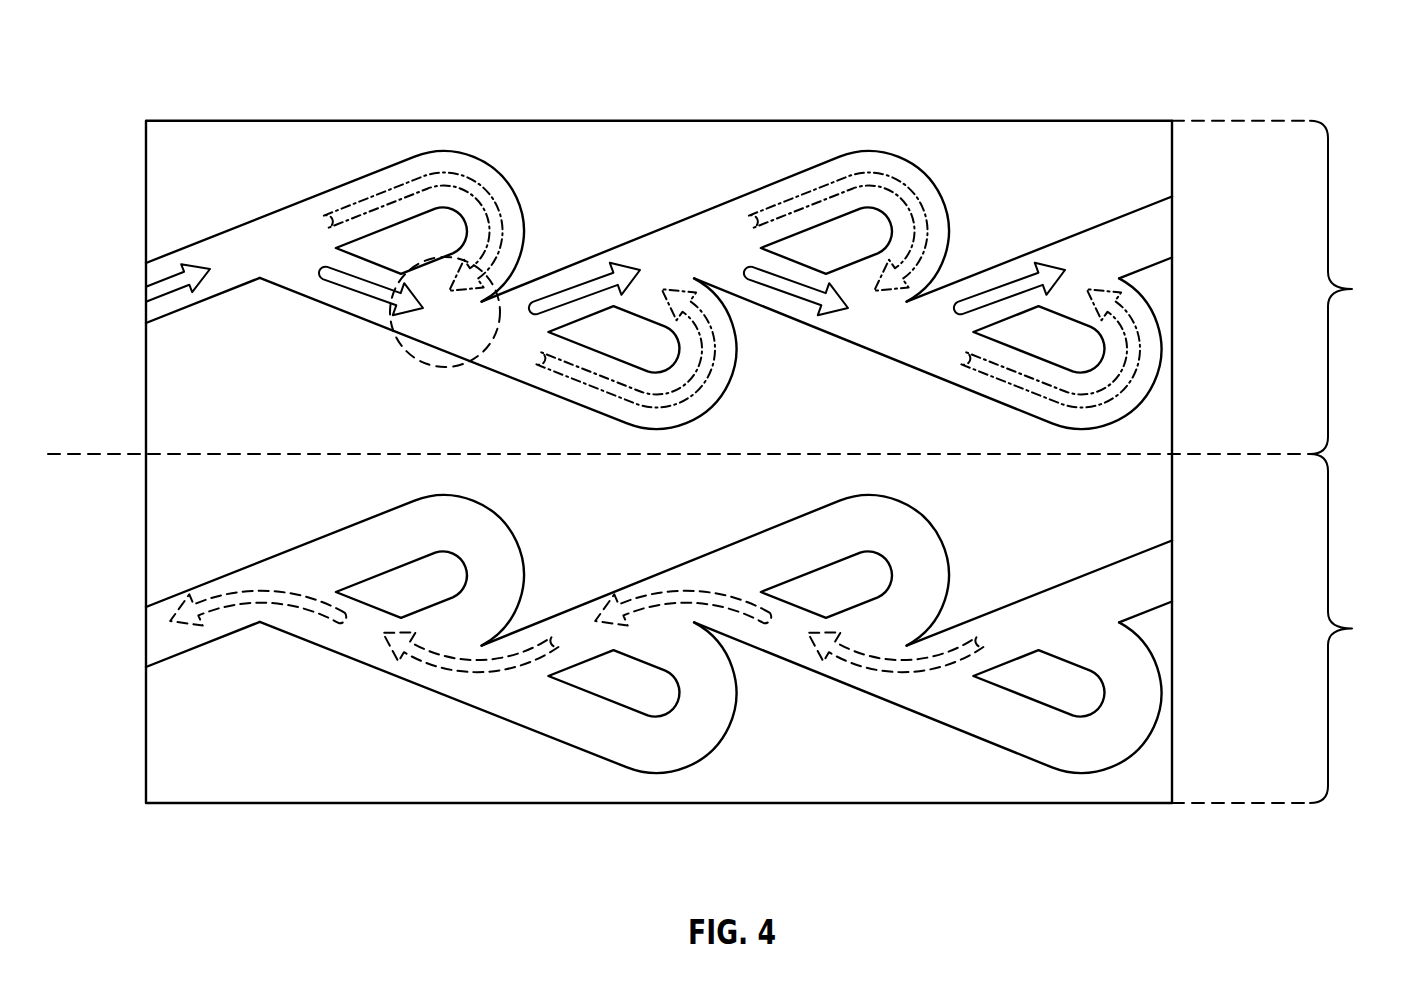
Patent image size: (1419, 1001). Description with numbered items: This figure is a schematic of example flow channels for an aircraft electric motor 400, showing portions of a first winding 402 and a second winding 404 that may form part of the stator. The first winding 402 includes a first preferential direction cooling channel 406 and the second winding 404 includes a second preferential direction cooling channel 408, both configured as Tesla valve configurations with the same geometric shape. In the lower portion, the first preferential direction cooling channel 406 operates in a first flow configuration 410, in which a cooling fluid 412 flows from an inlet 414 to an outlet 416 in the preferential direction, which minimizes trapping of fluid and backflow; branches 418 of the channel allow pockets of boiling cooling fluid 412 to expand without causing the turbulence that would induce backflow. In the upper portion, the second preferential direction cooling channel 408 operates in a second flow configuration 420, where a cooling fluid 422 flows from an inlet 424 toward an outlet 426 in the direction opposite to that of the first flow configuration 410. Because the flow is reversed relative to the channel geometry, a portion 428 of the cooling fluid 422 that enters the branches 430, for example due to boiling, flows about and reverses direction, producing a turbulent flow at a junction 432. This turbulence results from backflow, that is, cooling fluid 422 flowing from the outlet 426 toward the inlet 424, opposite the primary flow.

The aircraft electric motor 400 is at (138, 52).
The first winding 402 is at (400, 782).
The second winding 404 is at (290, 152).
The first preferential direction cooling channel 406 is at (653, 773).
The second preferential direction cooling channel 408 is at (678, 218).
The first flow configuration 410 is at (1357, 628).
The cooling fluid 412 is at (878, 667).
The inlet 414 is at (1150, 583).
The outlet 416 is at (165, 642).
The branches 418 is at (627, 754).
The second flow configuration 420 is at (1357, 287).
The cooling fluid 422 is at (358, 293).
The inlet 424 is at (167, 305).
The outlet 426 is at (1150, 240).
The portion of the cooling fluid 428 is at (461, 176).
The branches 430 is at (943, 172).
The junction 432 is at (438, 370).